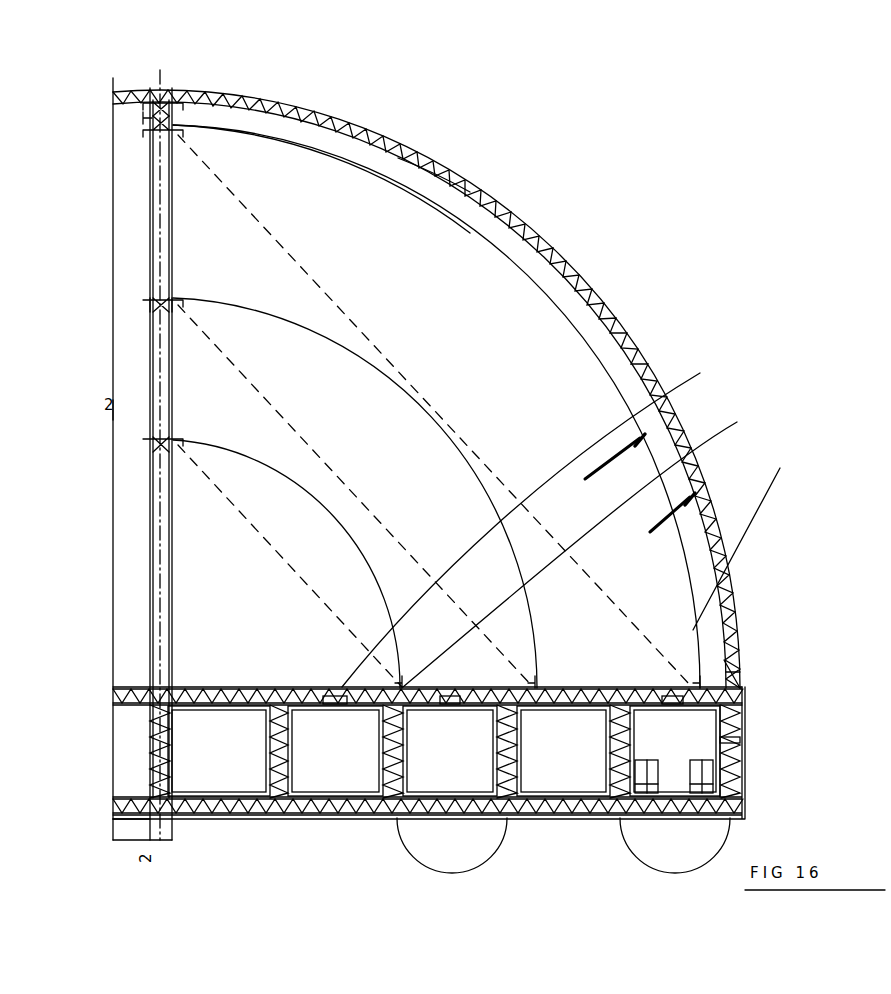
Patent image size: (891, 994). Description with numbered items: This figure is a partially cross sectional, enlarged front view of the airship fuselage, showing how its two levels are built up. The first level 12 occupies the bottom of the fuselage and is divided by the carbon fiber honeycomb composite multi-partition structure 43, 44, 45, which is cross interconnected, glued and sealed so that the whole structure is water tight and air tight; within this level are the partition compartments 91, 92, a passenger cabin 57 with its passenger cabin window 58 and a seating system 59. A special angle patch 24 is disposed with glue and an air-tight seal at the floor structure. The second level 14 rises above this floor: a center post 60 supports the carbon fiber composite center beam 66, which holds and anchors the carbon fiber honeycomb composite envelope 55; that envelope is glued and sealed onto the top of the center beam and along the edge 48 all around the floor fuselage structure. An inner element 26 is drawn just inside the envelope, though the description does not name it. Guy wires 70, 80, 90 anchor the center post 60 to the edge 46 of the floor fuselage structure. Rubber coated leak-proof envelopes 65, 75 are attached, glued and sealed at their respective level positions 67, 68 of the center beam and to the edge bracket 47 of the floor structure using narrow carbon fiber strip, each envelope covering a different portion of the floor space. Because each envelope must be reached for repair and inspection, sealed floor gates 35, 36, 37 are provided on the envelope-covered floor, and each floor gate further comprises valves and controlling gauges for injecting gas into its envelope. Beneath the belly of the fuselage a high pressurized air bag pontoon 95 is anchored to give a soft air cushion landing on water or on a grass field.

The first level 12 is at (600, 819).
The second level 14 is at (210, 722).
The angle patch 24 is at (150, 790).
The inner arch rib 26 is at (178, 262).
The sealed floor gate 35 is at (531, 523).
The sealed floor gate 36 is at (580, 548).
The sealed floor gate 37 is at (743, 544).
The multi-partition 43 is at (385, 735).
The multi-partition 44 is at (590, 705).
The multi-partition 45 is at (193, 800).
The edge of the floor fuselage structure 46 is at (732, 448).
The edge bracket 47 is at (150, 118).
The edge 48 is at (735, 683).
The carbon fiber honeycomb composite envelope 55 is at (253, 388).
The passenger cabin 57 is at (722, 727).
The passenger cabin window 58 is at (693, 732).
The seating system 59 is at (722, 770).
The center post 60 is at (157, 210).
The envelope 65 is at (441, 203).
The carbon fiber composite center beam 66 is at (173, 92).
The center beam level position 67 is at (173, 120).
The center beam level position 68 is at (150, 445).
The guy wire 70 is at (230, 184).
The envelope 75 is at (407, 498).
The guy wire 80 is at (398, 160).
The guy wire 90 is at (373, 497).
The partition compartment 91 is at (150, 803).
The partition compartment 92 is at (408, 815).
The high pressurized air bag pontoon 95 is at (440, 460).